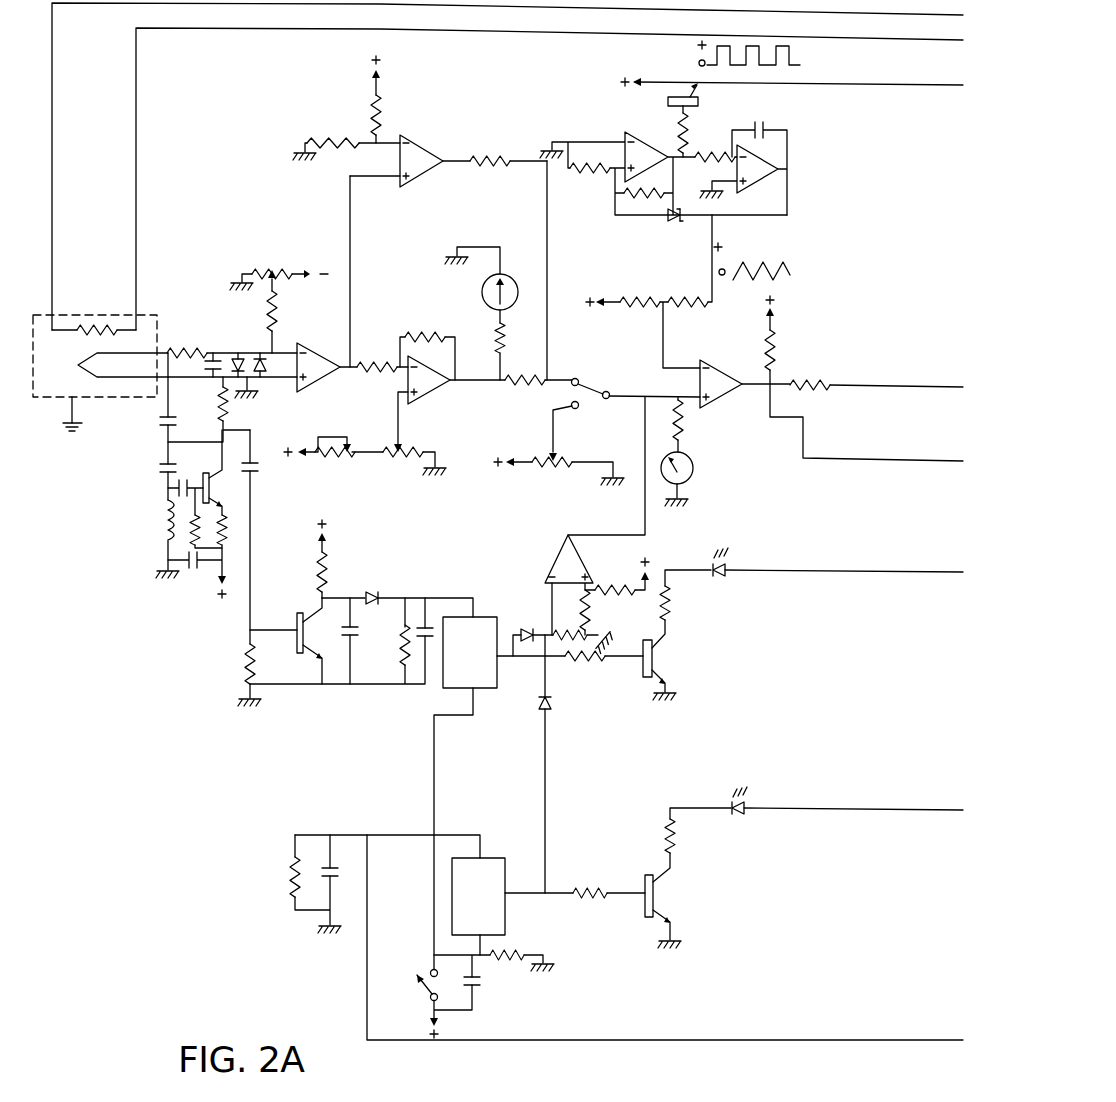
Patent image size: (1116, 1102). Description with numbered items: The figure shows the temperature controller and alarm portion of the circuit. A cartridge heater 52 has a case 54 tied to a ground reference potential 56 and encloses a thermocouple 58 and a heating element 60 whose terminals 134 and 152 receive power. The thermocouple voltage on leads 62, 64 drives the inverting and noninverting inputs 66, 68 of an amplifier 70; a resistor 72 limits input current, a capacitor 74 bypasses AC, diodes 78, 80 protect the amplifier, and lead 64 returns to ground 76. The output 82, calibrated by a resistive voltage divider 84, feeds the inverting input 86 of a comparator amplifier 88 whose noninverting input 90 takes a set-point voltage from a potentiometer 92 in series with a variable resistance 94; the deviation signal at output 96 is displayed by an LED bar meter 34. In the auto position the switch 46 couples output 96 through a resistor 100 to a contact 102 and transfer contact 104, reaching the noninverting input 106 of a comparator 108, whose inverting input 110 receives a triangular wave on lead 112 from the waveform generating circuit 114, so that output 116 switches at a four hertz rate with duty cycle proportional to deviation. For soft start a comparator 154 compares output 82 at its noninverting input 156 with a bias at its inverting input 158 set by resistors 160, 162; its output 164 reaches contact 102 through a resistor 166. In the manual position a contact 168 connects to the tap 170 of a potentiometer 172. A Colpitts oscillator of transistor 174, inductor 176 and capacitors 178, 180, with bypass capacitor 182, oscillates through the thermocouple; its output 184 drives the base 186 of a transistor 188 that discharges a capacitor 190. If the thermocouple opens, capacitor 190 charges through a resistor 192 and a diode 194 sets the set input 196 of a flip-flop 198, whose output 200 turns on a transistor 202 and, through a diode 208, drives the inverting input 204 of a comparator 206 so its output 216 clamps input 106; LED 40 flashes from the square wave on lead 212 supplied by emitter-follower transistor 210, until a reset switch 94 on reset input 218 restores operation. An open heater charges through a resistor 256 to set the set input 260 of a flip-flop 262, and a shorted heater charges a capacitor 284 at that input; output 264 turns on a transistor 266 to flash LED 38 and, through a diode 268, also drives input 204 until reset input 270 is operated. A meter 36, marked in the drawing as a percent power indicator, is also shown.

The LED bar meter 34 is at (522, 270).
The percent power indicator meter 36 is at (692, 484).
The LED 38 is at (746, 806).
The LED 40 is at (727, 567).
The auto/manual switch 46 is at (566, 392).
The cartridge heater 52 is at (117, 306).
The case 54 is at (68, 402).
The ground electrical reference potential 56 is at (84, 425).
The thermocouple 58 is at (81, 369).
The resistive heating element 60 is at (78, 337).
The output lead 62 is at (168, 330).
The output lead 64 is at (164, 378).
The inverting input 66 is at (294, 346).
The noninverting input 68 is at (282, 383).
The amplifier 70 is at (338, 380).
The resistor 72 is at (186, 348).
The capacitor 74 is at (211, 380).
The ground reference potential 76 is at (248, 402).
The diode 78 is at (235, 353).
The diode 80 is at (258, 347).
The output 82 is at (317, 356).
The resistive voltage divider combination 84 is at (278, 280).
The inverting input 86 is at (380, 382).
The comparator amplifier 88 is at (450, 390).
The noninverting input 90 is at (400, 420).
The multiple-turn potentiometer 92 is at (436, 445).
The variable resistance 94 is at (352, 446).
The output 96 is at (462, 379).
The resistor 100 is at (526, 376).
The contact 102 is at (596, 378).
The transfer contact 104 is at (612, 385).
The noninverting input 106 is at (692, 414).
The comparator 108 is at (714, 370).
The inverting input 110 is at (680, 360).
The lead 112 is at (710, 223).
The waveform generating circuit 114 is at (609, 218).
The output 116 is at (752, 388).
The side of heating element 134 is at (57, 222).
The terminal of heating element 152 is at (137, 197).
The comparator 154 is at (422, 142).
The noninverting input 156 is at (380, 186).
The inverting input 158 is at (390, 132).
The resistor 160 is at (341, 134).
The resistor 162 is at (368, 111).
The output 164 is at (466, 157).
The resistor 166 is at (500, 166).
The contact 168 is at (564, 416).
The movable tap 170 is at (555, 443).
The potentiometer 172 is at (519, 456).
The transistor 174 is at (215, 490).
The inductor 176 is at (160, 518).
The capacitor 178 is at (162, 466).
The capacitor 180 is at (174, 422).
The bypass capacitor 182 is at (192, 578).
The output 184 is at (262, 475).
The base 186 is at (266, 619).
The transistor 188 is at (330, 660).
The capacitor 190 is at (352, 658).
The resistor 192 is at (325, 566).
The diode 194 is at (374, 588).
The set input 196 is at (472, 598).
The flip-flop 198 is at (482, 700).
The output 200 is at (509, 658).
The transistor 202 is at (662, 660).
The inverting input 204 is at (547, 584).
The comparator 206 is at (597, 560).
The diode 208 is at (522, 620).
The transistor 210 is at (688, 92).
The lead 212 is at (826, 80).
The output 216 is at (637, 532).
The reset input 218 is at (454, 704).
The resistor 256 is at (782, 349).
The set input 260 is at (478, 842).
The flip-flop 262 is at (515, 848).
The output 264 is at (522, 896).
The transistor 266 is at (660, 895).
The diode 268 is at (548, 710).
The reset input 270 is at (485, 942).
The capacitor 284 is at (330, 838).